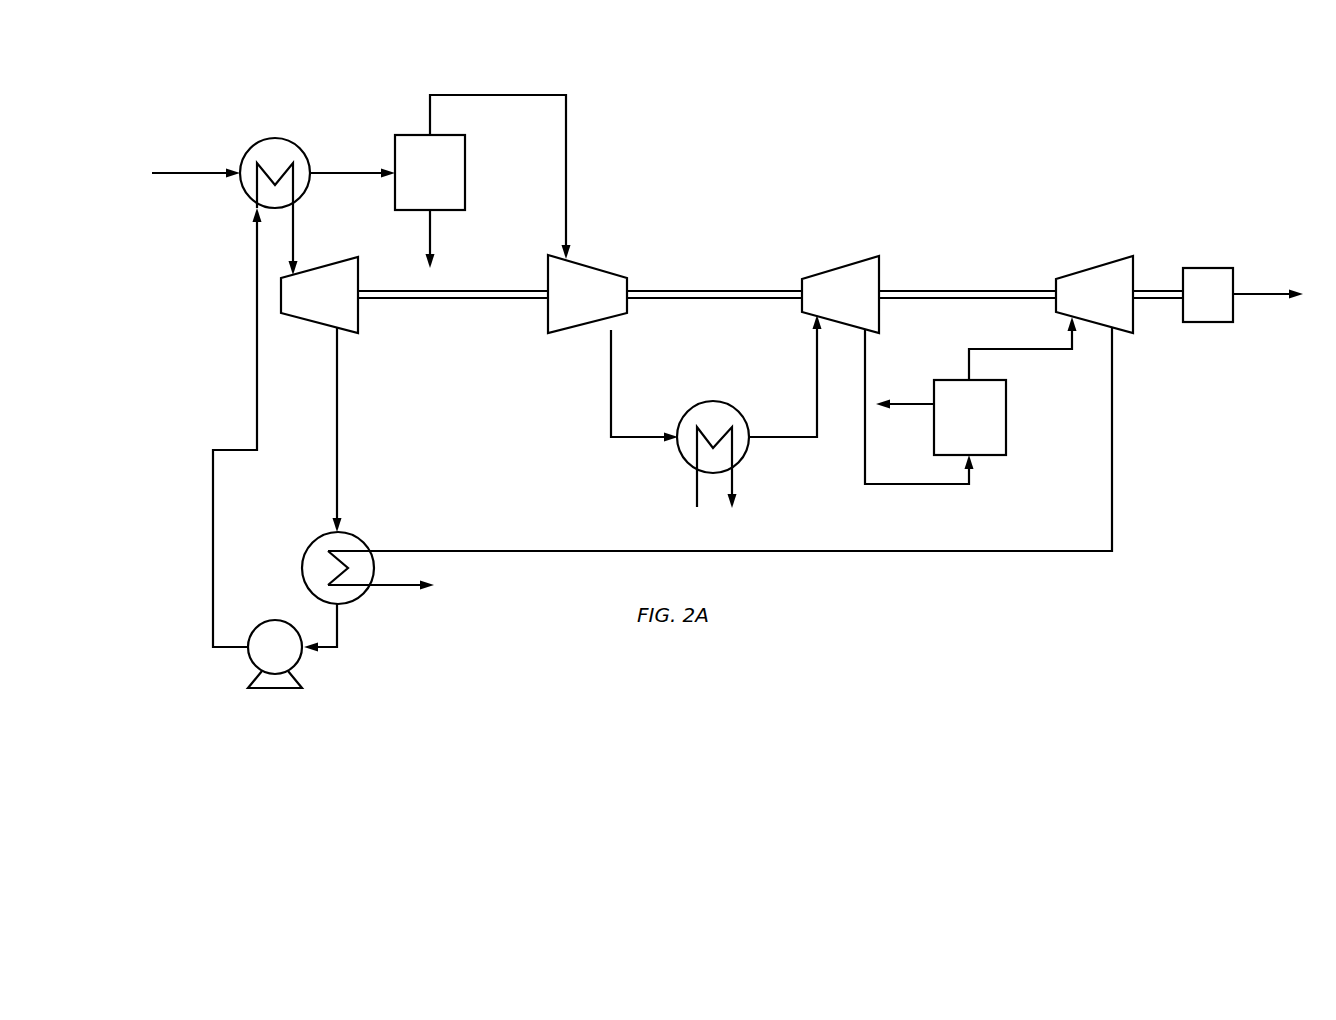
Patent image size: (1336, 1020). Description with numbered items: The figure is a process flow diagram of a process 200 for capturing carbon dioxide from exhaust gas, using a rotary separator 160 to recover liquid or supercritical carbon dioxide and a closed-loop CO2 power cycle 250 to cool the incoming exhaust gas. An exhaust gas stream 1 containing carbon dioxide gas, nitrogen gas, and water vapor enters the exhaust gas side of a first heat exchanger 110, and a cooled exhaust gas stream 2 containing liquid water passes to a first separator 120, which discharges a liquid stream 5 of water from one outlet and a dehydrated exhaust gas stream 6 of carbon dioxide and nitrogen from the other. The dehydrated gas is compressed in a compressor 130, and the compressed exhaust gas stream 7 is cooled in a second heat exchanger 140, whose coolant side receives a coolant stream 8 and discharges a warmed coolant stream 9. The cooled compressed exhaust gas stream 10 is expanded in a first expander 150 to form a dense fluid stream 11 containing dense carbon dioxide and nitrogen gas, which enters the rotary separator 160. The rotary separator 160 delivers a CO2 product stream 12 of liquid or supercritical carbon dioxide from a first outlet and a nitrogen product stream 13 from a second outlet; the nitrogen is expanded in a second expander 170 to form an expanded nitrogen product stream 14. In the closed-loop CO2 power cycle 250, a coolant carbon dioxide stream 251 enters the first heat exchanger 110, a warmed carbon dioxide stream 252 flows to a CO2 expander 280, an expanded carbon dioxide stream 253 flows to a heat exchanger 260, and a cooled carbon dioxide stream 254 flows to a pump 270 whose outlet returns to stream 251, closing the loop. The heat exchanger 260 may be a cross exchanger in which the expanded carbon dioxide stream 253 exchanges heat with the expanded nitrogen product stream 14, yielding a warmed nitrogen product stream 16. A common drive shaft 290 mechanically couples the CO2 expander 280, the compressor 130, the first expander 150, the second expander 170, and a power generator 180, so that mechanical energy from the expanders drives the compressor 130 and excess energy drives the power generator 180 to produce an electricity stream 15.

The process 200 is at (1044, 64).
The first heat exchanger 110 is at (272, 138).
The exhaust gas stream 1 is at (183, 171).
The cooled exhaust gas stream 2 is at (341, 171).
The first separator 120 is at (412, 184).
The dehydrated exhaust gas stream 6 is at (499, 94).
The liquid stream 5 is at (434, 222).
The warmed carbon dioxide stream 252 is at (296, 226).
The CO2 expander 280 is at (310, 306).
The drive shaft 290 is at (425, 299).
The compressor 130 is at (560, 306).
The first expander 150 is at (825, 308).
The second expander 170 is at (1079, 308).
The power generator 180 is at (1190, 308).
The electricity stream 15 is at (1255, 292).
The compressed exhaust gas stream 7 is at (609, 383).
The second heat exchanger 140 is at (698, 405).
The coolant stream 8 is at (696, 487).
The coolant stream 9 is at (735, 478).
The cooled compressed exhaust gas stream 10 is at (783, 438).
The dense fluid stream 11 is at (920, 485).
The rotary separator 160 is at (952, 431).
The CO2 product stream 12 is at (910, 402).
The nitrogen product stream 13 is at (1020, 350).
The expanded nitrogen product stream 14 is at (1113, 348).
The expanded carbon dioxide stream 253 is at (339, 419).
The heat exchanger 260 is at (362, 537).
The warmed nitrogen product stream 16 is at (392, 589).
The cooled carbon dioxide stream 254 is at (328, 650).
The pump 270 is at (256, 672).
The coolant carbon dioxide stream 251 is at (212, 548).
The closed-loop CO2 power cycle 250 is at (168, 596).